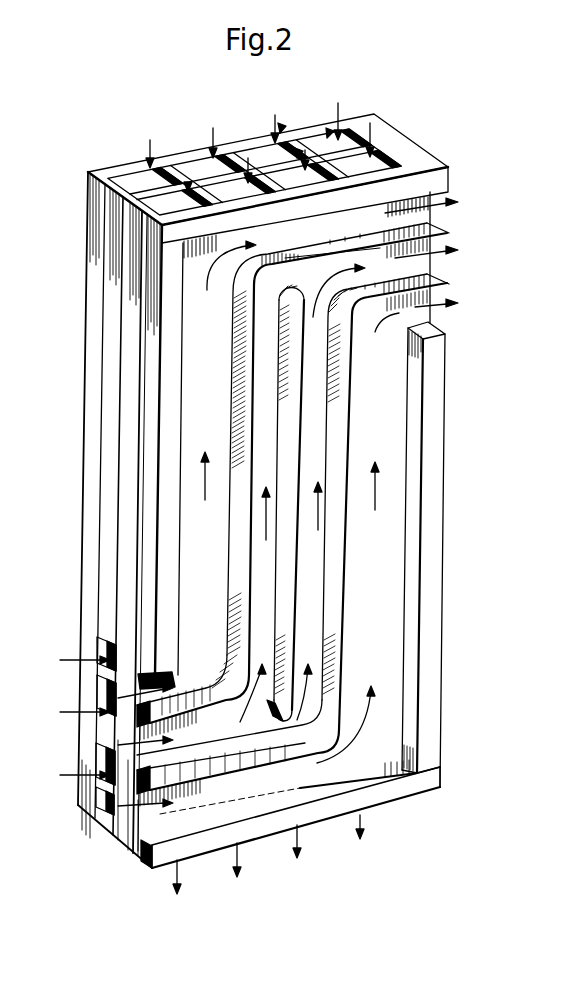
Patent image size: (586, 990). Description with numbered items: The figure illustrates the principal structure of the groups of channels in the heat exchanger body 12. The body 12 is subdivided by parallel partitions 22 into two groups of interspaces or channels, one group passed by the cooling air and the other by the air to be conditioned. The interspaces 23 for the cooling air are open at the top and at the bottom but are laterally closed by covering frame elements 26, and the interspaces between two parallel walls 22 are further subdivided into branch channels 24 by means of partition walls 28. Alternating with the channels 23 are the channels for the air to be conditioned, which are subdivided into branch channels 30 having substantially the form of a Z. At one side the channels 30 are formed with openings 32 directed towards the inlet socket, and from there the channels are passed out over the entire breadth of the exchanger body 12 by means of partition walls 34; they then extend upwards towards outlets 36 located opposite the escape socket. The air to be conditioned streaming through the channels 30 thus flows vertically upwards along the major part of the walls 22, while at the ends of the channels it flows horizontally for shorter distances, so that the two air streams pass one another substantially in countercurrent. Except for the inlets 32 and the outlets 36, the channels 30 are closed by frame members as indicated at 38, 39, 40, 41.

The body 12 is at (389, 504).
The partitions 22 is at (297, 156).
The interspaces for the cooling air 23 is at (203, 160).
The branch channels 24 is at (187, 185).
The covering frame elements 26 is at (130, 300).
The partition walls 28 is at (329, 136).
The branch channels 30 is at (265, 607).
The openings 32 is at (104, 702).
The partition walls 34 is at (301, 428).
The outlets 36 is at (424, 263).
The frame member 38 is at (150, 437).
The frame member 39 is at (424, 163).
The frame member 40 is at (434, 562).
The frame member 41 is at (343, 808).